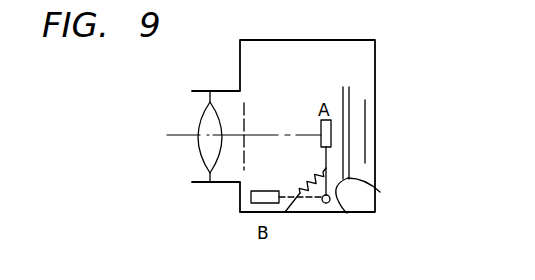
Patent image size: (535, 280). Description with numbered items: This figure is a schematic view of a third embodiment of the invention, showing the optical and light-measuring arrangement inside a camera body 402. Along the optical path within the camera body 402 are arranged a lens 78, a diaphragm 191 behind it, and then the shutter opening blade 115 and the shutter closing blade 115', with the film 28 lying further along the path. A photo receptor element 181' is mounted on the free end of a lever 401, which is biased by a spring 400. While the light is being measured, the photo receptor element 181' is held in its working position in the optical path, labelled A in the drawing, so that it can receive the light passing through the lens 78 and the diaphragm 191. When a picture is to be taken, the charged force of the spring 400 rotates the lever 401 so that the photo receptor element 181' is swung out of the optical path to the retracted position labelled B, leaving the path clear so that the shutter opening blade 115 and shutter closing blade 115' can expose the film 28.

The camera body 402 is at (376, 77).
The lens 78 is at (209, 125).
The diaphragm 191 is at (246, 163).
The photo receptor element 181' is at (294, 123).
The spring 400 is at (311, 201).
The lever 401 is at (342, 153).
The film 28 is at (366, 163).
The shutter opening blade 115 is at (353, 210).
The shutter closing blade 115' is at (400, 196).